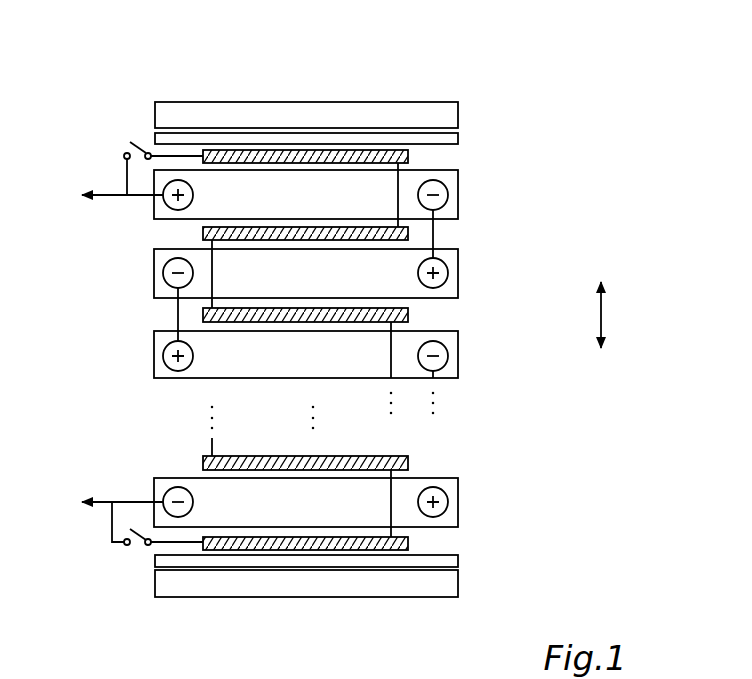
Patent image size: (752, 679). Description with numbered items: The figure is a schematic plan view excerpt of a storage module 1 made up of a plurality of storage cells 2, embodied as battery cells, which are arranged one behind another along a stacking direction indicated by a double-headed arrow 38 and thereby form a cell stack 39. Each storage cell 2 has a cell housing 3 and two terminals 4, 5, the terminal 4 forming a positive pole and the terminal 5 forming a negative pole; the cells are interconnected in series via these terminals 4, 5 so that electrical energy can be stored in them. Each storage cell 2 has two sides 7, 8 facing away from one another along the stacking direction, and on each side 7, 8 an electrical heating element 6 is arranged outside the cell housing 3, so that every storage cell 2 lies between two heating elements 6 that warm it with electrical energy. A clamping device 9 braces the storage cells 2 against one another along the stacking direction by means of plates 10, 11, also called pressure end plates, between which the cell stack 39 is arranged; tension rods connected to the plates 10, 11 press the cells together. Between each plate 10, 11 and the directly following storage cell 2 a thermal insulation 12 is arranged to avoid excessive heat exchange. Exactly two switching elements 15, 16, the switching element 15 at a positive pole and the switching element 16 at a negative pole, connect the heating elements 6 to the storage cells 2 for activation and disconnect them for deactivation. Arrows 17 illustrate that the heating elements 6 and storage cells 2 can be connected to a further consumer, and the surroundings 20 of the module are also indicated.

The storage module 1 is at (465, 100).
The storage cell 2 is at (465, 190).
The cell housing 3 is at (460, 205).
The terminal 4 is at (150, 207).
The terminal 5 is at (447, 183).
The electrical heating element 6 is at (330, 150).
The side 7 is at (452, 168).
The side 8 is at (440, 225).
The clamping device 9 is at (148, 82).
The plate 10 is at (197, 102).
The plate 11 is at (460, 590).
The thermal insulation 12 is at (262, 132).
The switching element 15 is at (120, 137).
The switching element 16 is at (138, 552).
The arrow 17 is at (103, 198).
The surroundings 20 is at (611, 428).
The double-headed arrow 38 is at (601, 312).
The cell stack 39 is at (393, 75).